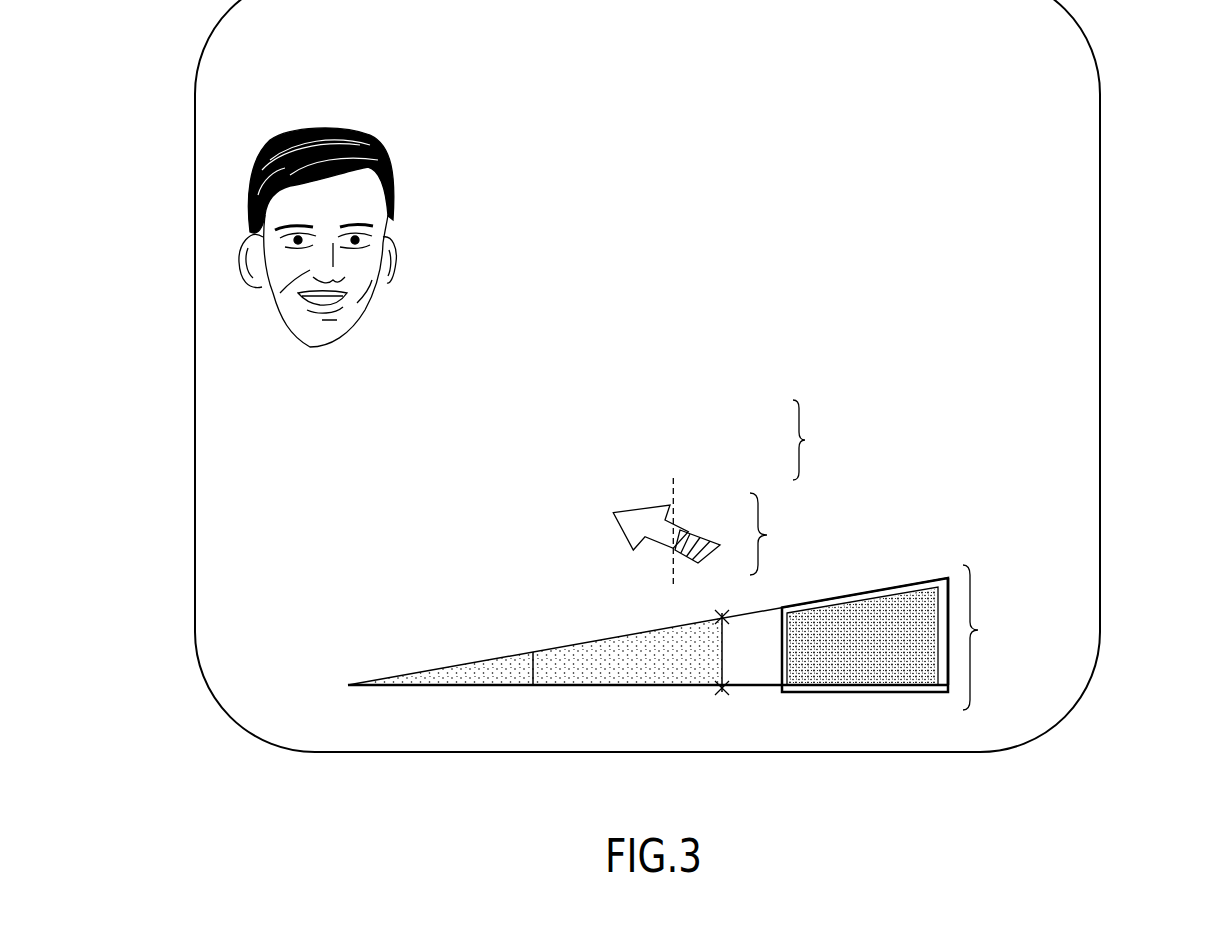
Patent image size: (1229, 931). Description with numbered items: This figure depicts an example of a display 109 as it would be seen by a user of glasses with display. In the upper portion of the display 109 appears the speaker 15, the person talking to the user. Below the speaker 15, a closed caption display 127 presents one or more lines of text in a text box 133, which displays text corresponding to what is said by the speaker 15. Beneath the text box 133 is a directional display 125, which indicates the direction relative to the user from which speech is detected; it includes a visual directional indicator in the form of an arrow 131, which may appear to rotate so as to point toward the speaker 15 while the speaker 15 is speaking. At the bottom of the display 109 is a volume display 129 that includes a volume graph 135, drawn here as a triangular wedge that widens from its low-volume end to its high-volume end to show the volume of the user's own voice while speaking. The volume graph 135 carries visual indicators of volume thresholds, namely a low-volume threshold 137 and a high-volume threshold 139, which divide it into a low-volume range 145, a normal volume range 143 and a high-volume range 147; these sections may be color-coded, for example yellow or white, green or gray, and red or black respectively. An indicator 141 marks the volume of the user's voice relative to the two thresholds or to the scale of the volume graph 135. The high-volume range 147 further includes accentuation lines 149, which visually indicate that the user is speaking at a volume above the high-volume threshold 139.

The speaker 15 is at (396, 182).
The display 109 is at (1102, 203).
The directional display 125 is at (767, 535).
The closed caption display 127 is at (805, 440).
The volume display 129 is at (978, 630).
The arrow 131 is at (620, 520).
The text box 133 is at (578, 441).
The volume graph 135 is at (405, 675).
The low-volume threshold 137 is at (540, 670).
The high-volume threshold 139 is at (788, 653).
The indicator 141 is at (722, 655).
The normal volume range 143 is at (633, 663).
The low-volume range 145 is at (507, 675).
The high-volume range 147 is at (892, 663).
The accentuation lines 149 is at (895, 583).